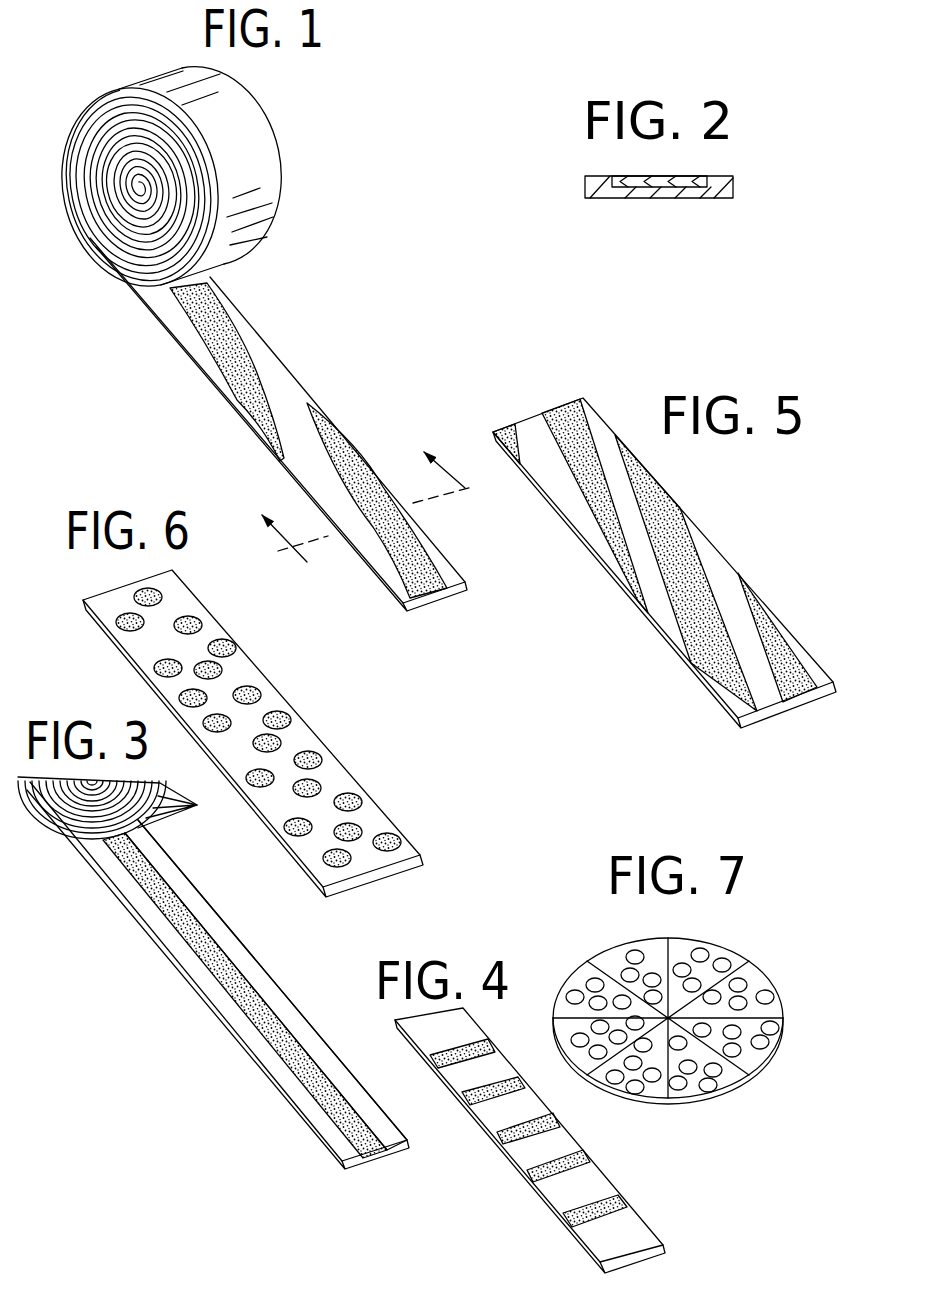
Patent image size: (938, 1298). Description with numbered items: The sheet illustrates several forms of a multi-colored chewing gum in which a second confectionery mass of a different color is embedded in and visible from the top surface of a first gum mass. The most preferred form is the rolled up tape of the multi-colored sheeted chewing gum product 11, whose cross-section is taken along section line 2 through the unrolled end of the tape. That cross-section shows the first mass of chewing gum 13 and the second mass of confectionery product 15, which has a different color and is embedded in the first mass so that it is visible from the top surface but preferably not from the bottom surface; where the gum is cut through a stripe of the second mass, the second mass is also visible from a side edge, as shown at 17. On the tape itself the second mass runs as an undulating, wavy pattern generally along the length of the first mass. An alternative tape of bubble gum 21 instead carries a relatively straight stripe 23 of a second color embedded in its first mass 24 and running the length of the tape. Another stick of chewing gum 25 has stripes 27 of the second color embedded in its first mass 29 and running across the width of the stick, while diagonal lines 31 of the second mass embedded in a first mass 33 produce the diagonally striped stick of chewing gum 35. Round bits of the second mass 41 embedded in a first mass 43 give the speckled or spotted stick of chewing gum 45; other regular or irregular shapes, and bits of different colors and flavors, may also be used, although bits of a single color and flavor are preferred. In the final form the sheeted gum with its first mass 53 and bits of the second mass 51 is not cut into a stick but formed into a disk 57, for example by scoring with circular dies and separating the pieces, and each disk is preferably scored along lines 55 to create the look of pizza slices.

In FIG. 1, the multi-colored sheeted chewing gum product 11 is at (304, 164).
In FIG. 1, the first mass of chewing gum 13 is at (447, 582).
In FIG. 2, the first mass of chewing gum 13 is at (733, 188).
In FIG. 1, the second mass of confectionery product 15 is at (338, 443).
In FIG. 2, the second mass of confectionery product 15 is at (660, 182).
In FIG. 1, the side edge showing second mass 17 is at (247, 403).
In FIG. 1, the section line 2— 2 is at (371, 516).
In FIG. 3, the tape of bubble gum 21 is at (213, 973).
In FIG. 3, the stripe 23 is at (221, 974).
In FIG. 3, the first mass 24 is at (271, 997).
In FIG. 4, the stick of chewing gum 25 is at (532, 1140).
In FIG. 4, the stripes 27 is at (577, 1153).
In FIG. 4, the first mass 29 is at (565, 1185).
In FIG. 5, the diagonal lines 31 is at (650, 495).
In FIG. 5, the first mass 33 is at (593, 430).
In FIG. 5, the diagonally striped stick of chewing gum 35 is at (569, 392).
In FIG. 6, the bits of the second mass 41 is at (146, 592).
In FIG. 6, the first mass 43 is at (143, 638).
In FIG. 6, the speckled or spotted stick of chewing gum 45 is at (244, 725).
In FIG. 7, the bits of the second mass 51 is at (740, 985).
In FIG. 7, the first mass 53 is at (740, 1063).
In FIG. 7, the score lines 55 is at (750, 1015).
In FIG. 7, the disk 57 is at (691, 1001).